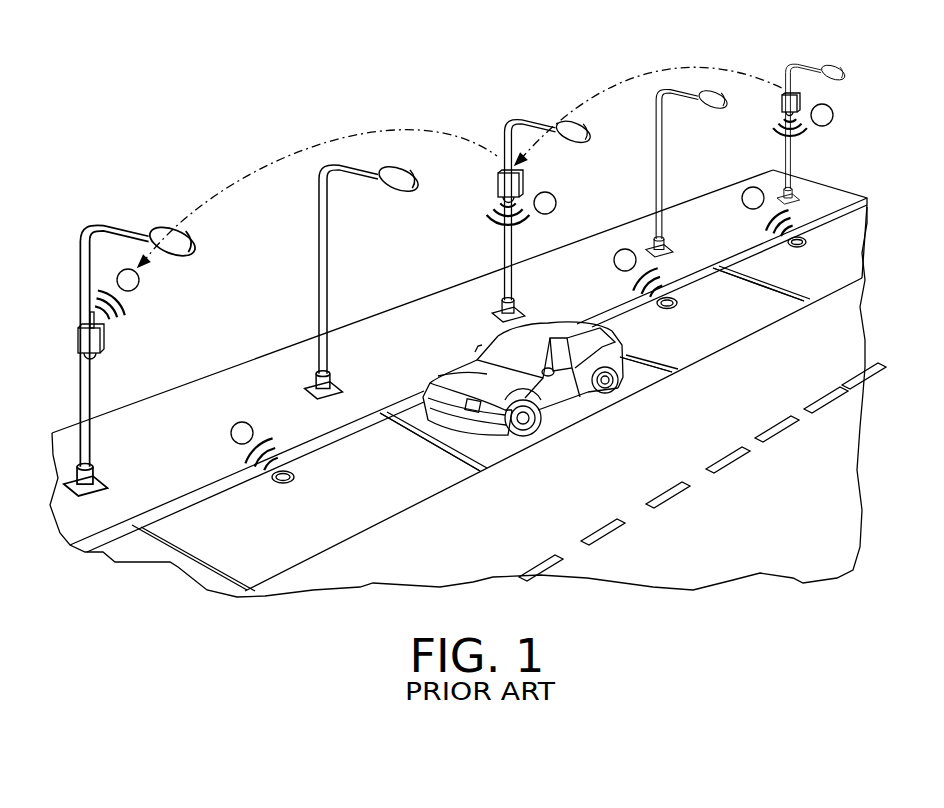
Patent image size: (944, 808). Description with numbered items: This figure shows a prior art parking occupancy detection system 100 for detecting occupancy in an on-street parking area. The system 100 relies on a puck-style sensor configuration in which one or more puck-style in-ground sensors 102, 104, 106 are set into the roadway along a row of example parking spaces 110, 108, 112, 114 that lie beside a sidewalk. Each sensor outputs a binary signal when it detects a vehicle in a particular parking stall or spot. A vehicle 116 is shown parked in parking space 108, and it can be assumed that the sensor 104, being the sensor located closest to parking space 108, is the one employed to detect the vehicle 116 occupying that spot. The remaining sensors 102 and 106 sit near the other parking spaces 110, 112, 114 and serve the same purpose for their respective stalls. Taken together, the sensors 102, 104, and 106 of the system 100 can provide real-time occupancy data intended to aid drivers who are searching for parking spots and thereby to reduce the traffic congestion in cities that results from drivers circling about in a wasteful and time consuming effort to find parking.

The parking occupancy detection system 100 is at (412, 101).
The puck-style in-ground sensor 102 is at (776, 251).
The puck-style in-ground sensor 104 is at (694, 303).
The puck-style in-ground sensor 106 is at (312, 470).
The parking space 108 is at (490, 452).
The parking space 110 is at (273, 555).
The parking space 112 is at (693, 343).
The parking space 114 is at (817, 280).
The vehicle 116 is at (493, 337).